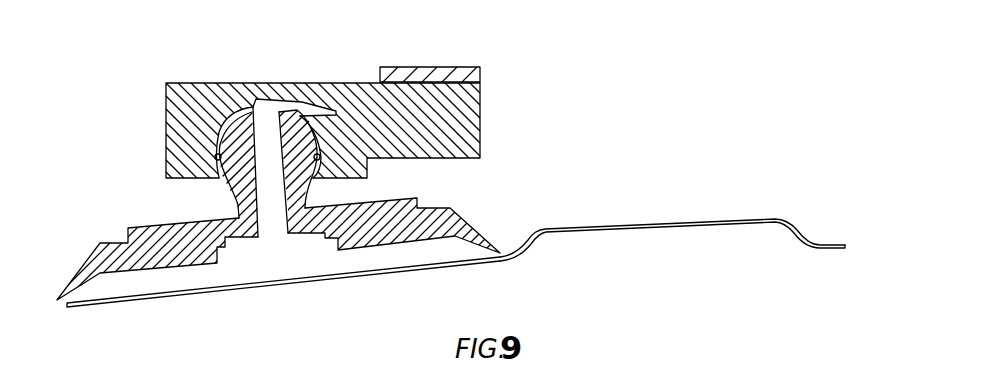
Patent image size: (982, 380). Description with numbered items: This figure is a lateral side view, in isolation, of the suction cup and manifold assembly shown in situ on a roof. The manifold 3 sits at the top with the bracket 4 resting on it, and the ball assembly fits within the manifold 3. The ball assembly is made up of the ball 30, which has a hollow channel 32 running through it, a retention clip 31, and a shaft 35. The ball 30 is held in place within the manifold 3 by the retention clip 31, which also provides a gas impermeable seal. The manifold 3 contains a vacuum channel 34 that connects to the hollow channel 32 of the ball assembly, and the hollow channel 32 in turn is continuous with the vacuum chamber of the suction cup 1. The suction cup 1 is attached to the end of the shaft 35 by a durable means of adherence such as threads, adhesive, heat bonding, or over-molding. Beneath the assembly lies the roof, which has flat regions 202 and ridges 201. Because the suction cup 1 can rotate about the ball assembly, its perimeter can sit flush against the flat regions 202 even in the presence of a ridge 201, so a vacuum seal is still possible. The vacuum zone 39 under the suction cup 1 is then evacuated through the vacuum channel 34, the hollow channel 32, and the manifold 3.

The suction cup 1 is at (114, 253).
The manifold 3 is at (186, 80).
The bracket 4 is at (434, 62).
The ball 30 is at (277, 190).
The retention clip 31 is at (215, 157).
The hollow channel 32 is at (275, 210).
The vacuum channel 34 is at (305, 113).
The shaft 35 is at (237, 201).
The vacuum zone 39 is at (258, 265).
The ridges 201 is at (622, 226).
The flat regions 202 is at (158, 294).